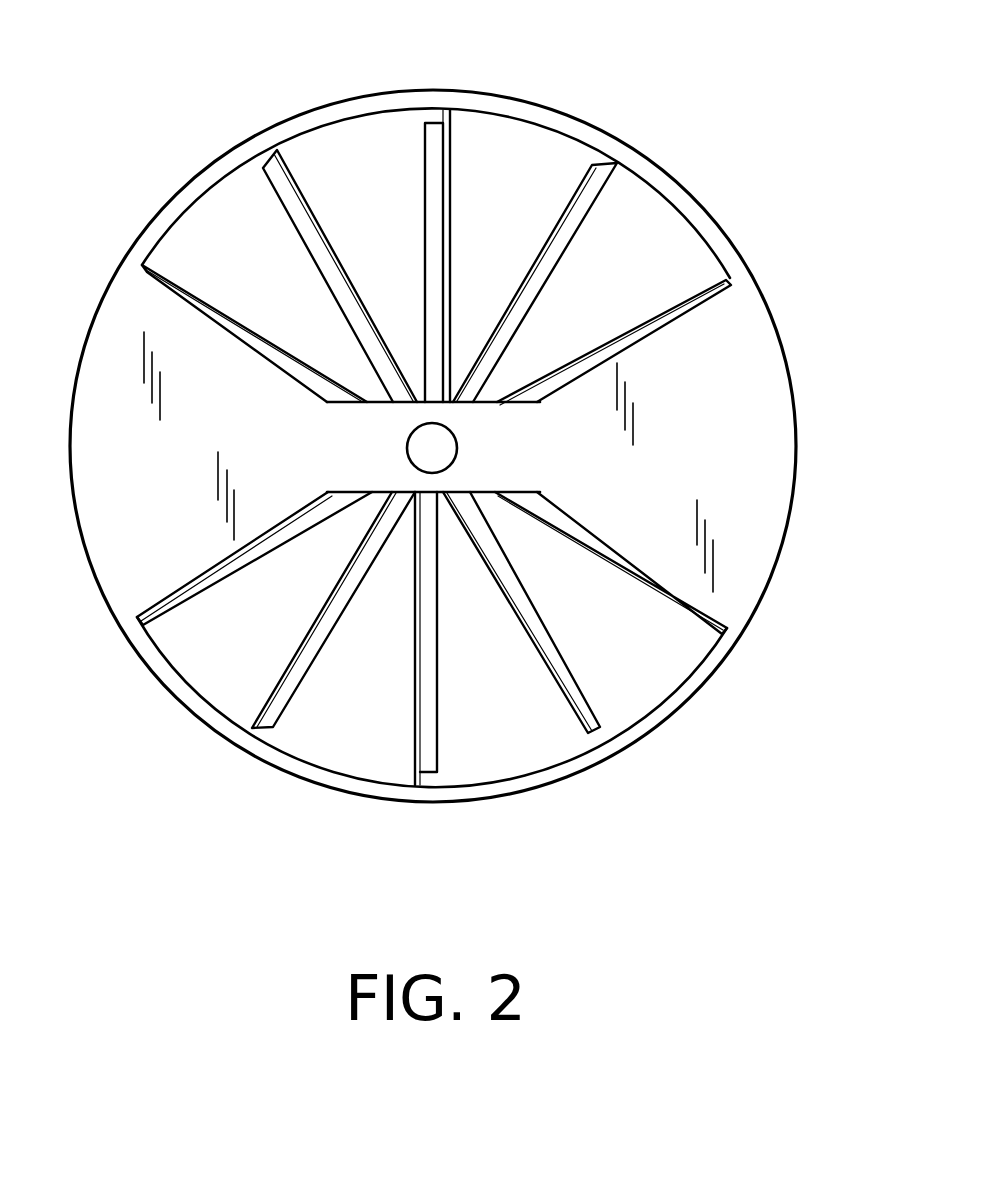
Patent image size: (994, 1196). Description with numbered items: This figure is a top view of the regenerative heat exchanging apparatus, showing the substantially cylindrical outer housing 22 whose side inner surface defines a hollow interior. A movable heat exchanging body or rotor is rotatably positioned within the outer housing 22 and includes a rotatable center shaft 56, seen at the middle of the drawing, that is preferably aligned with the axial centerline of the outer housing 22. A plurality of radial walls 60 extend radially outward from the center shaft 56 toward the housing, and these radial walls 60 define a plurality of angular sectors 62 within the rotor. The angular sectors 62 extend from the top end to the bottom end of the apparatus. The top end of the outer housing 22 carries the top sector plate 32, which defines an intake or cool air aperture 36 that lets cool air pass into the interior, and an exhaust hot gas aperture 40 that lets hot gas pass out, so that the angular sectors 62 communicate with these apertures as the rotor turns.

The outer housing 22 is at (664, 180).
The top sector plate 32 is at (762, 450).
The intake or cool air aperture 36 is at (504, 148).
The exhaust hot gas aperture 40 is at (538, 742).
The rotatable center shaft 56 is at (436, 455).
The radial walls 60 is at (425, 165).
The angular sectors 62 is at (435, 440).